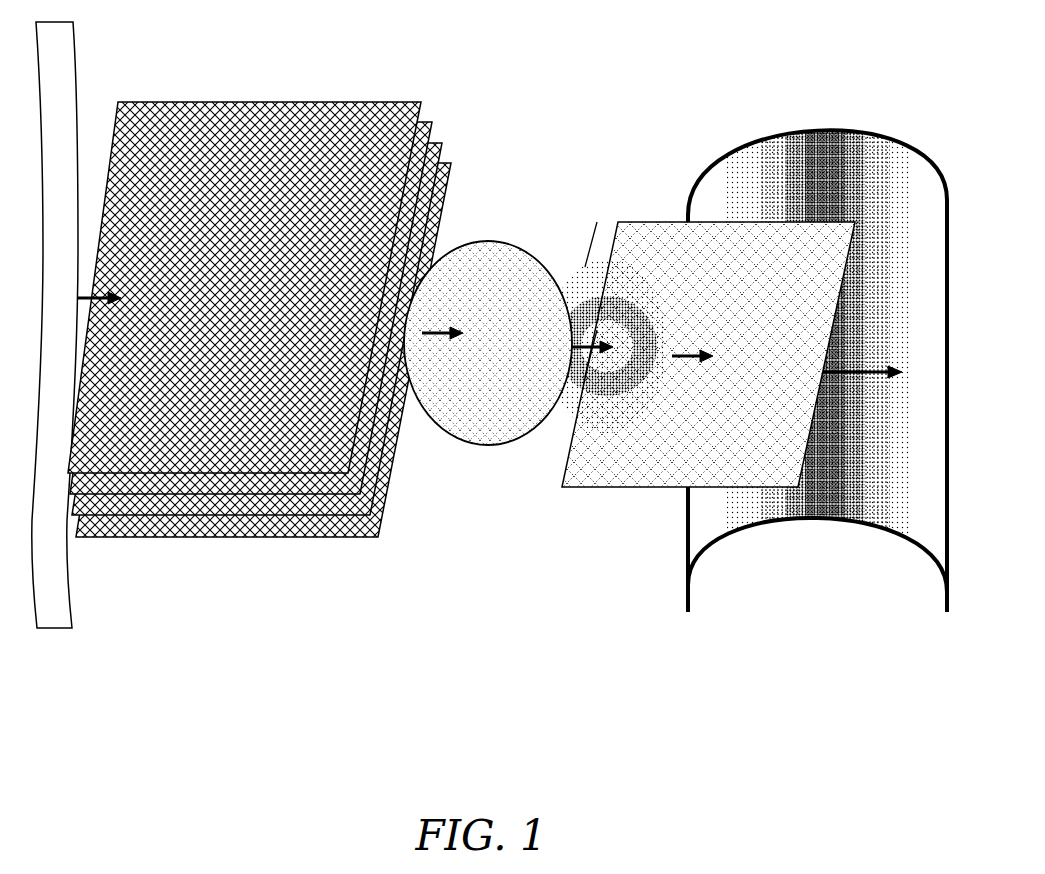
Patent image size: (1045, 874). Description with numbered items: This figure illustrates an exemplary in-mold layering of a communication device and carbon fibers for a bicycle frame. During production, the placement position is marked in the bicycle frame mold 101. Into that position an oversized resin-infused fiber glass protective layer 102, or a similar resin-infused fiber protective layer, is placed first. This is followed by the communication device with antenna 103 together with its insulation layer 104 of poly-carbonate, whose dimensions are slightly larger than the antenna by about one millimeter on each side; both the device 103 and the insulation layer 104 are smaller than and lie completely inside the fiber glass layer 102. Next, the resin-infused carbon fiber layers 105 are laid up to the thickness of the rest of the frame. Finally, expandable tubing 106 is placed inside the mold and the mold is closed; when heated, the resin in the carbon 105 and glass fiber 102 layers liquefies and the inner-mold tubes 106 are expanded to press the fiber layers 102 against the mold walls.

The bicycle frame mold 101 is at (780, 537).
The protective layer 102 is at (607, 497).
The communication device 103 is at (582, 243).
The insulation layer 104 is at (467, 450).
The carbon fiber layers 105 is at (259, 368).
The expandable tubing 106 is at (112, 376).